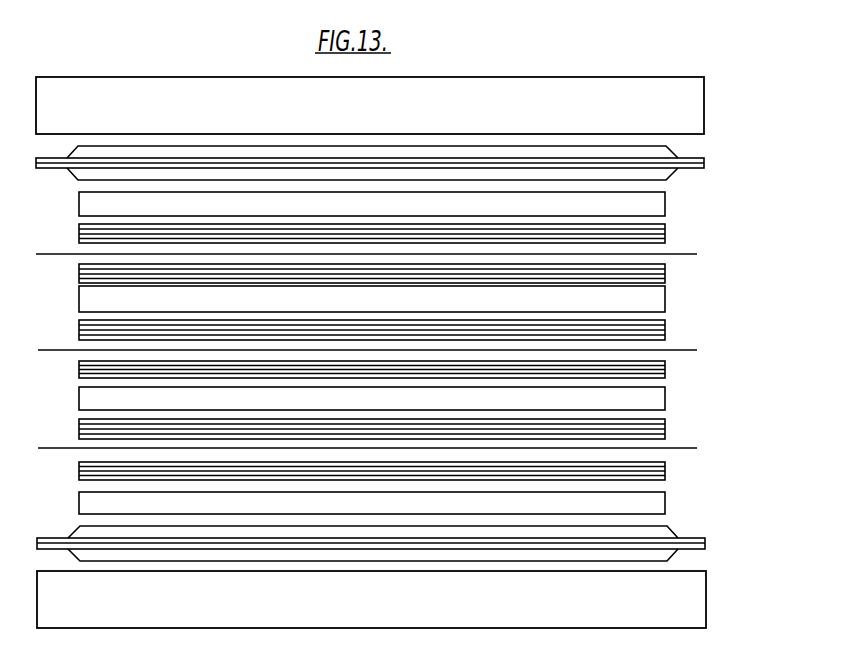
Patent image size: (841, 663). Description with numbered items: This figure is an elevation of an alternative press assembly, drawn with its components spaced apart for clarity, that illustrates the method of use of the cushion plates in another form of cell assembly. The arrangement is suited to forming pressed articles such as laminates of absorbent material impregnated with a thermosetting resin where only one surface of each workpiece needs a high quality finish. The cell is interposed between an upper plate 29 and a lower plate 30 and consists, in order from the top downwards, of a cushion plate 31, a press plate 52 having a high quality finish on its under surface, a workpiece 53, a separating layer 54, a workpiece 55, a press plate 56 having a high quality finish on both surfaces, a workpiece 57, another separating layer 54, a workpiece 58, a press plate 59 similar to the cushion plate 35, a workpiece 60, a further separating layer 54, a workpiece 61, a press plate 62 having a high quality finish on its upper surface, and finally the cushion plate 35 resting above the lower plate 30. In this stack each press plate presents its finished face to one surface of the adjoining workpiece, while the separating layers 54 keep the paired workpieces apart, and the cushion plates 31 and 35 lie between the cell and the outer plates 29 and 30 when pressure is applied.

The plate 29 is at (695, 113).
The plate 30 is at (697, 598).
The cushion plate 31 is at (705, 163).
The cushion plate 35 is at (706, 542).
The press plate 52 is at (658, 204).
The workpiece 53 is at (665, 233).
The separating layer 54 is at (697, 254).
The workpiece 55 is at (665, 273).
The press plate 56 is at (659, 299).
The workpiece 57 is at (665, 330).
The workpiece 58 is at (665, 367).
The press plate 59 is at (657, 396).
The workpiece 60 is at (665, 427).
The workpiece 61 is at (665, 472).
The press plate 62 is at (657, 502).